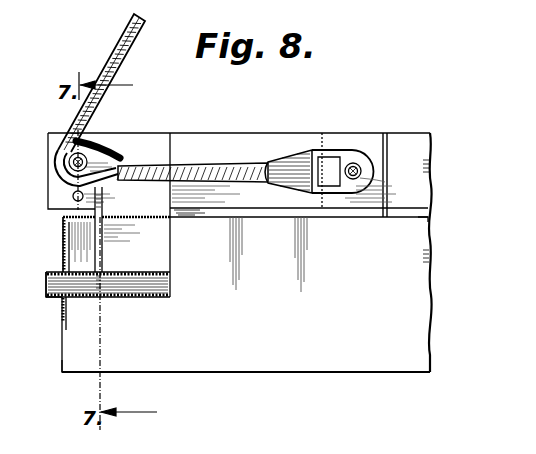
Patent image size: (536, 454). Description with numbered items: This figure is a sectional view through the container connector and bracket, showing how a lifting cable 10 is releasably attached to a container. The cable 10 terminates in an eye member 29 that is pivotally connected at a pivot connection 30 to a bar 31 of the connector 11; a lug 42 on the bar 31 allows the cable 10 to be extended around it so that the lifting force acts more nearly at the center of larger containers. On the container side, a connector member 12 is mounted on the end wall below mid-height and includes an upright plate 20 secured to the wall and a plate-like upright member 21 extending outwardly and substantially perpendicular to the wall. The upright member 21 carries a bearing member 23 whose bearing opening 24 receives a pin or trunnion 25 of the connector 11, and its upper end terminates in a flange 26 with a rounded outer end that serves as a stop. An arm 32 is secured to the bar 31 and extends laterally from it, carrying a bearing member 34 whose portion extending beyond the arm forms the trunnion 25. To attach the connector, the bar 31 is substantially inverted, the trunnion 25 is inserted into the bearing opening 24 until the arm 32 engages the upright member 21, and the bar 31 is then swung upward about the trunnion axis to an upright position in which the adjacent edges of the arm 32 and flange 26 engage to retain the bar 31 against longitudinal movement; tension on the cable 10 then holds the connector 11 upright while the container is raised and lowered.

The cable 10 is at (123, 57).
The connector 11 is at (345, 140).
The connector member 12 is at (62, 373).
The upright plate 20 is at (253, 362).
The upright member 21 is at (62, 312).
The bearing member 23 is at (57, 268).
The bearing opening 24 is at (50, 290).
The trunnion 25 is at (142, 290).
The flange 26 is at (101, 226).
The eye member 29 is at (303, 155).
The pivot connection 30 is at (352, 180).
The bar 31 is at (213, 140).
The arm 32 is at (160, 244).
The bearing member 34 is at (110, 288).
The lug 42 is at (58, 178).